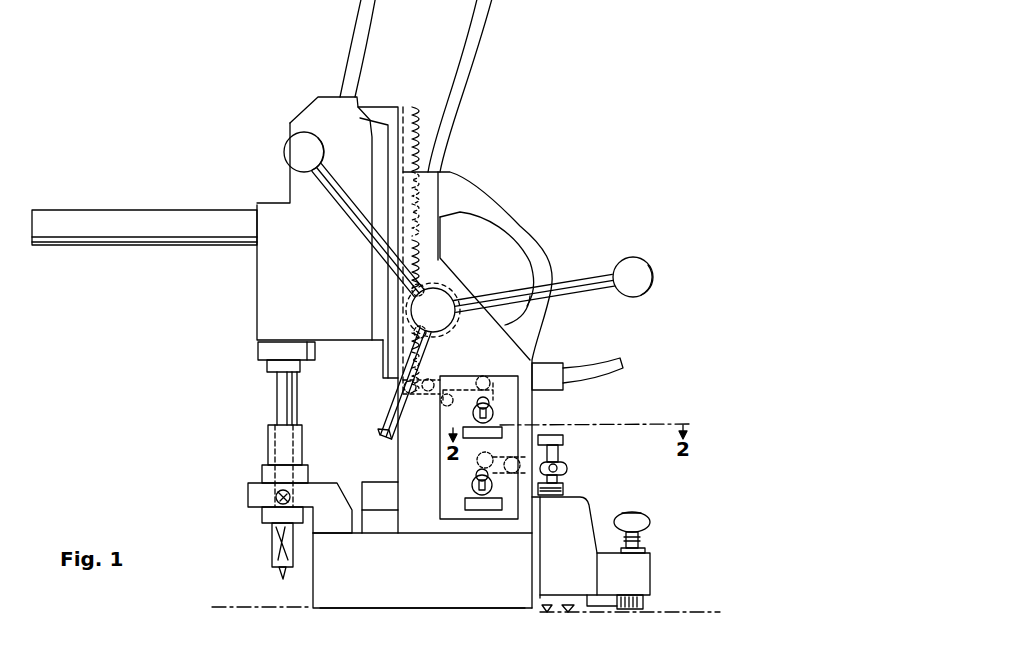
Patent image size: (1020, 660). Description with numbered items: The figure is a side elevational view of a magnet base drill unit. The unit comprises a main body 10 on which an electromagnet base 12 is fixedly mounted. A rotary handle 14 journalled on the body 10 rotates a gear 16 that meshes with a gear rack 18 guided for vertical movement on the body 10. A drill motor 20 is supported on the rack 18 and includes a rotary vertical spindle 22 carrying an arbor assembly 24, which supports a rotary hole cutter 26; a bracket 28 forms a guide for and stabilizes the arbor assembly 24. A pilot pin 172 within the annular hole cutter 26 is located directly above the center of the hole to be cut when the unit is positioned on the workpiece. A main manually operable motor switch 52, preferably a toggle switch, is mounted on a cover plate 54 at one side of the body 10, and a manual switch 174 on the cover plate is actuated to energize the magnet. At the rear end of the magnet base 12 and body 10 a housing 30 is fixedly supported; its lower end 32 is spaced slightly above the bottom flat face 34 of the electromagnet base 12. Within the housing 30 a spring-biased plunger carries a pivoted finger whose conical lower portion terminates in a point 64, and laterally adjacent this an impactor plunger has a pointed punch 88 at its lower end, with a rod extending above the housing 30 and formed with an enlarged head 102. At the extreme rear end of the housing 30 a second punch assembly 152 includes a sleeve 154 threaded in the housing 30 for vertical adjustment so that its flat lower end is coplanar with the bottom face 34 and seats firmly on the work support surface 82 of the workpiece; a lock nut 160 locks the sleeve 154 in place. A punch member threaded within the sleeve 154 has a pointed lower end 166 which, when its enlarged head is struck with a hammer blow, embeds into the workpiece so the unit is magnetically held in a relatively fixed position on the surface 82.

The main body 10 is at (400, 522).
The electromagnet base 12 is at (470, 606).
The rotary handle 14 is at (652, 264).
The gear 16 is at (452, 292).
The gear rack 18 is at (418, 130).
The drill motor 20 is at (316, 96).
The rotary vertical spindle 22 is at (292, 399).
The arbor assembly 24 is at (263, 475).
The rotary hole cutter 26 is at (277, 542).
The bracket 28 is at (328, 482).
The housing 30 is at (587, 498).
The lower end of housing 32 is at (600, 613).
The bottom flat face 34 is at (407, 612).
The main manually operable motor switch 52 is at (492, 403).
The cover plate 54 is at (442, 507).
The point 64 is at (570, 609).
The work support surface 82 is at (288, 610).
The pointed punch 88 is at (548, 611).
The enlarged head 102 is at (600, 438).
The second punch assembly 152 is at (652, 538).
The sleeve 154 is at (650, 598).
The lock nut 160 is at (646, 521).
The pointed lower end 166 is at (630, 613).
The pilot pin 172 is at (281, 577).
The manual switch 174 is at (488, 494).